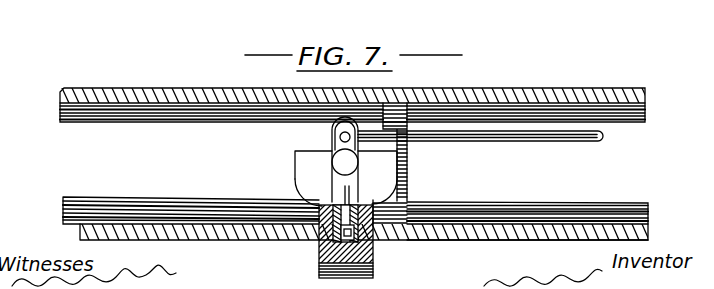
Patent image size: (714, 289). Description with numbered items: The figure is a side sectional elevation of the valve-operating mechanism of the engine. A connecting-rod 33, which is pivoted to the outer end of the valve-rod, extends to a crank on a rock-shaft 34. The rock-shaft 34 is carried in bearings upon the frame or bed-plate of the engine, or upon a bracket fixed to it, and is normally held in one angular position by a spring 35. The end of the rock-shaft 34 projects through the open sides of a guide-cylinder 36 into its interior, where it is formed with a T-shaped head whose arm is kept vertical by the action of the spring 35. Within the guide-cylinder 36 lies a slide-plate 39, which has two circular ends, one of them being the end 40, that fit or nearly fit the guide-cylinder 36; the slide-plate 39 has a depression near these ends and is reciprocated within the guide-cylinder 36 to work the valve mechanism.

The connecting-rod 33 is at (462, 139).
The rock-shaft 34 is at (340, 158).
The spring 35 is at (323, 200).
The guide-cylinder 36 is at (125, 113).
The slide-plate 39 is at (175, 203).
The circular end of slide-plate 40 is at (396, 181).